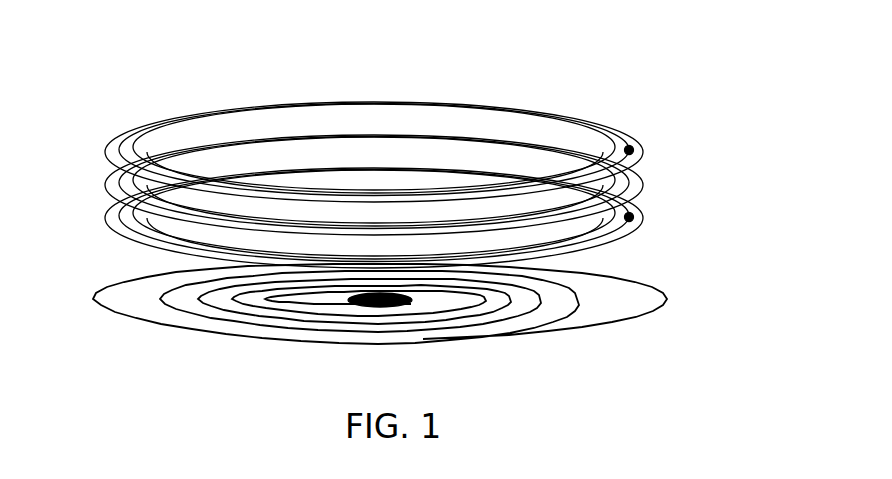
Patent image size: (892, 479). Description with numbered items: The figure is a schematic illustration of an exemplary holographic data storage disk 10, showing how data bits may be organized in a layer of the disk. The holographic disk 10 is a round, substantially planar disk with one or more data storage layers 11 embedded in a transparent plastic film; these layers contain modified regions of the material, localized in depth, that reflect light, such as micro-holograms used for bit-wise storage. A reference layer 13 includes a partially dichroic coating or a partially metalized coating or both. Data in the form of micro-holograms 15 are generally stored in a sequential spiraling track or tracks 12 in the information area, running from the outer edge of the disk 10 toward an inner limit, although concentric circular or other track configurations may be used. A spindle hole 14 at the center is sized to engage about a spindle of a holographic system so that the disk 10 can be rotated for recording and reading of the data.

The holographic disk 10 is at (642, 43).
The data storage layer 11 is at (396, 195).
The spiraling track 12 is at (134, 141).
The reference layer 13 is at (124, 343).
The spindle hole 14 is at (413, 301).
The micro-hologram 15 is at (633, 147).